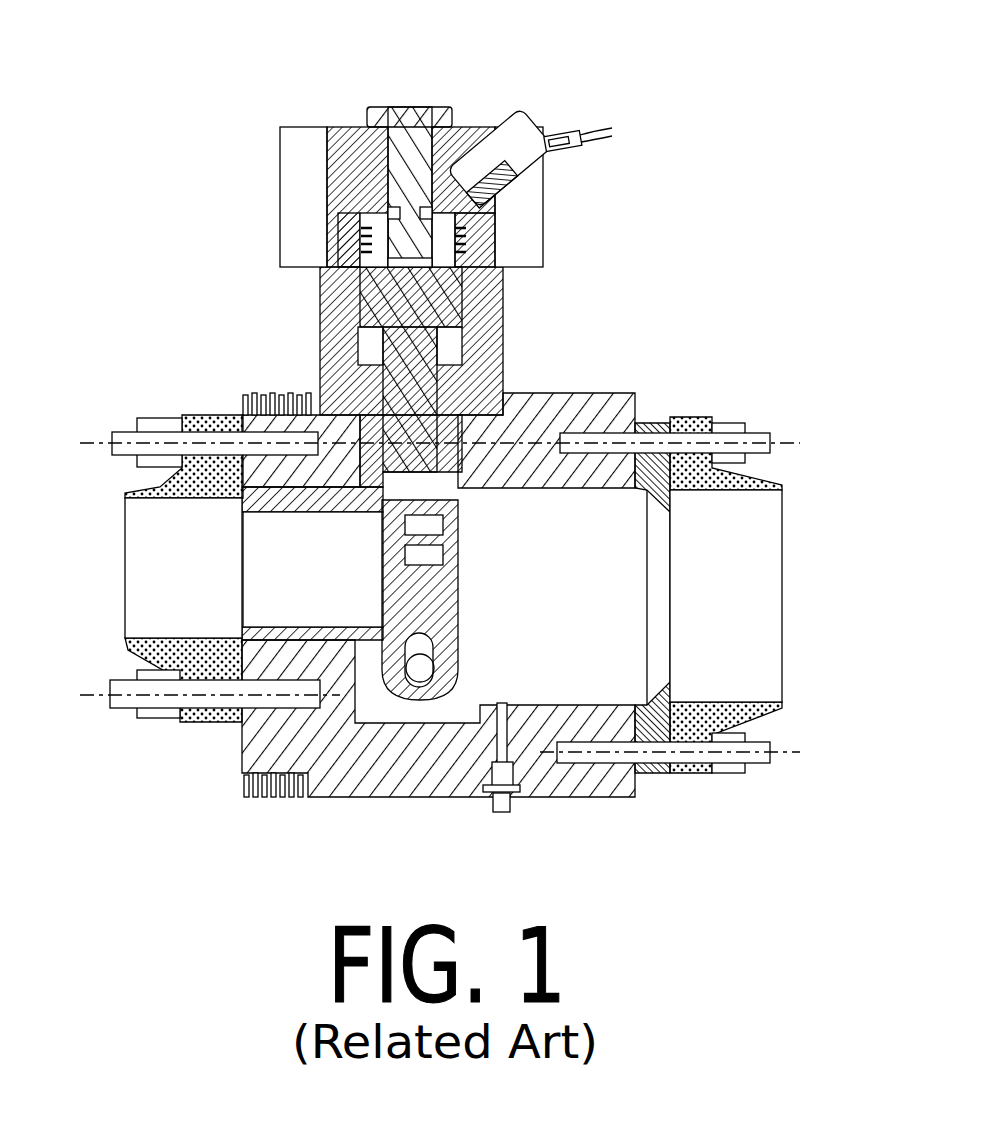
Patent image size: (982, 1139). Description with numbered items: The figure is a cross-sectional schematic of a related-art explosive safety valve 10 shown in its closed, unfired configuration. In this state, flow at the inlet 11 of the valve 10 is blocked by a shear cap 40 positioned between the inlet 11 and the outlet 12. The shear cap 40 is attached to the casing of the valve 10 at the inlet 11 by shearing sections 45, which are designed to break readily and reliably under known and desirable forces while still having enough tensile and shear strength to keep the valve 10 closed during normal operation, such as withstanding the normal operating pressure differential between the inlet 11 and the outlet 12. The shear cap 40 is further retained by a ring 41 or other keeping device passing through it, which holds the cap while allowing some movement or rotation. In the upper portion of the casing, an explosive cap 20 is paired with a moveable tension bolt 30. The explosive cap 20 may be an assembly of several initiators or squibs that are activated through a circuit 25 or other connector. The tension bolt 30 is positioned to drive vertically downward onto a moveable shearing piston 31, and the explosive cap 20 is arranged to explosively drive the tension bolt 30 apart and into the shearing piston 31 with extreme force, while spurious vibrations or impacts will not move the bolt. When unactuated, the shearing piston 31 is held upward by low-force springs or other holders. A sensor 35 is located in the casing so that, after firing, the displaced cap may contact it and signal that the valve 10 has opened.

The explosive safety valve 10 is at (167, 288).
The inlet 11 is at (178, 640).
The outlet 12 is at (690, 703).
The explosive cap 20 is at (526, 133).
The circuit 25 is at (578, 150).
The tension bolt 30 is at (405, 128).
The shearing piston 31 is at (417, 412).
The sensor 35 is at (505, 728).
The shear cap 40 is at (435, 550).
The ring 41 is at (418, 668).
The shearing sections 45 is at (383, 627).